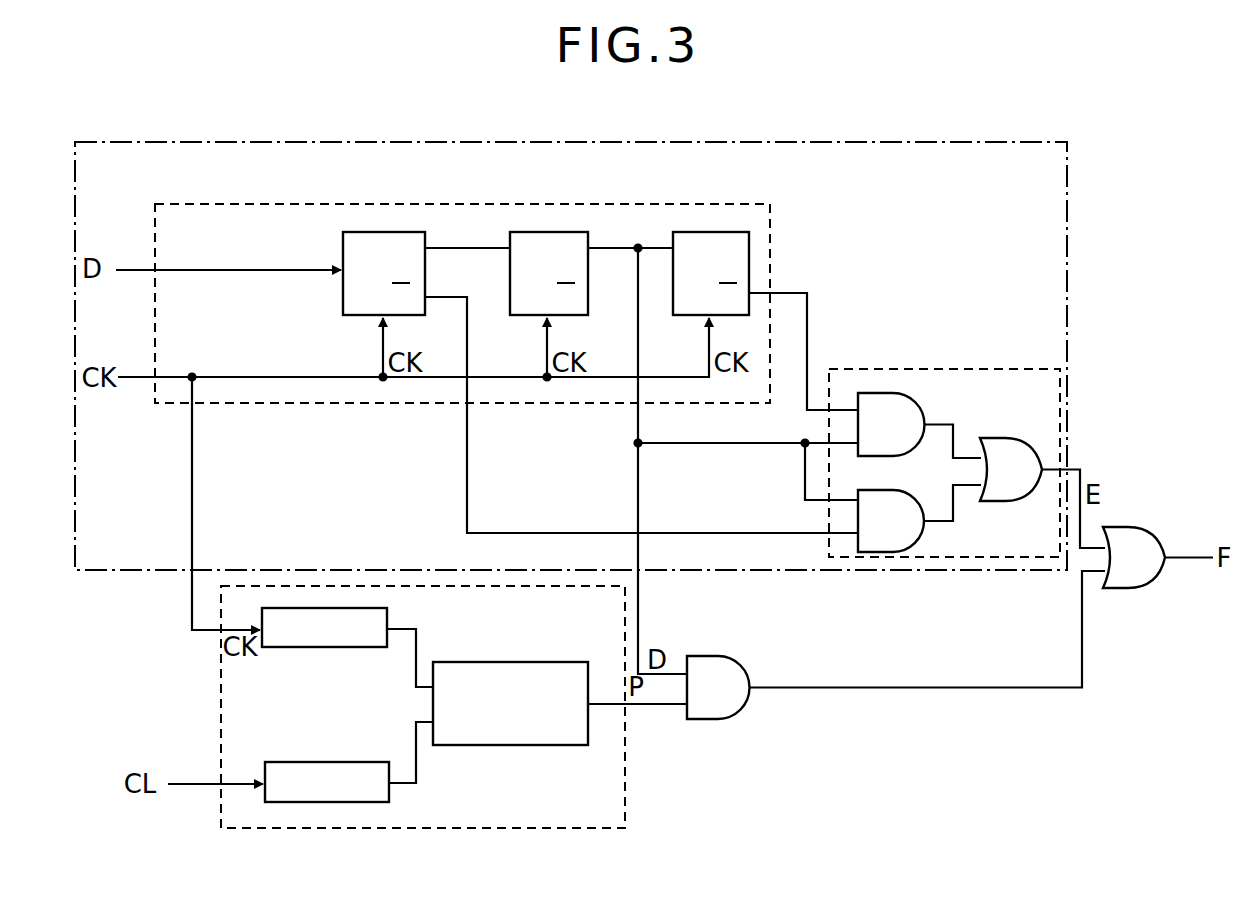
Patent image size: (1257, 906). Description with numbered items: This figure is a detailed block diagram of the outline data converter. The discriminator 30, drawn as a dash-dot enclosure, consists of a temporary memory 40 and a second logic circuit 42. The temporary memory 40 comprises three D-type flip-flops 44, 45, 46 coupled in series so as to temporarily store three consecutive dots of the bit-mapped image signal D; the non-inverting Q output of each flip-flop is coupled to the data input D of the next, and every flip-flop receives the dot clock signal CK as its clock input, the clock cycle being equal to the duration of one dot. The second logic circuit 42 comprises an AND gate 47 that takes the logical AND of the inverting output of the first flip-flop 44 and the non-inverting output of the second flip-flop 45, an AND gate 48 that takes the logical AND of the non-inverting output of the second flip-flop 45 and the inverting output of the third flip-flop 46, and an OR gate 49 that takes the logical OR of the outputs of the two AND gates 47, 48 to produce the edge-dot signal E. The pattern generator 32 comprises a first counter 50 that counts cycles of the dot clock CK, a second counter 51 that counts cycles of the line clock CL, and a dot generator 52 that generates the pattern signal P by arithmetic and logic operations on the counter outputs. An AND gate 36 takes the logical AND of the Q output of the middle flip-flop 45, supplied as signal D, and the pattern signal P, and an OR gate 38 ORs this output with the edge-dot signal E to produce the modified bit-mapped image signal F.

The discriminator 30 is at (178, 142).
The pattern generator 32 is at (318, 829).
The AND gate 36 is at (710, 656).
The OR gate 38 is at (1115, 527).
The temporary memory 40 is at (228, 205).
The second logic circuit 42 is at (950, 369).
The D-type flip-flop 44 is at (388, 232).
The D-type flip-flop 45 is at (547, 232).
The D-type flip-flop 46 is at (709, 232).
The AND gate 47 is at (885, 557).
The AND gate 48 is at (878, 393).
The OR gate 49 is at (993, 440).
The first counter 50 is at (387, 616).
The second counter 51 is at (392, 793).
The dot generator 52 is at (515, 662).